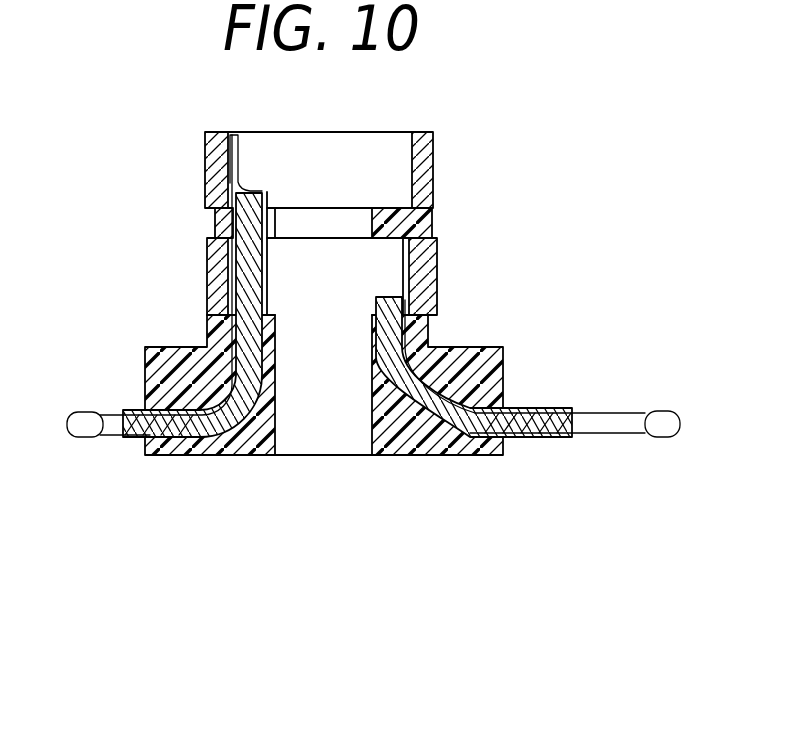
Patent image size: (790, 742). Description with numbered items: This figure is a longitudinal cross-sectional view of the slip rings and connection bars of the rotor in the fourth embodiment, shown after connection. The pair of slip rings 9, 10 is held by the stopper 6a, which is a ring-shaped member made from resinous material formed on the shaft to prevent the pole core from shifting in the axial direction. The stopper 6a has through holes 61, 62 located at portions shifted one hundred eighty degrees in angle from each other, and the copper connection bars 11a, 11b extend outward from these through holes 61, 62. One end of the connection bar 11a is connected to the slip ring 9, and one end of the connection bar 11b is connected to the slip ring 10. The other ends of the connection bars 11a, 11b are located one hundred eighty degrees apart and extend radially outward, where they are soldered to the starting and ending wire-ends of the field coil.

The slip ring 10 is at (437, 157).
The slip ring 9 is at (437, 258).
The stopper 6a is at (485, 375).
The through hole 61 is at (430, 416).
The through hole 62 is at (234, 400).
The connection bar 11a is at (590, 413).
The connection bar 11b is at (115, 436).